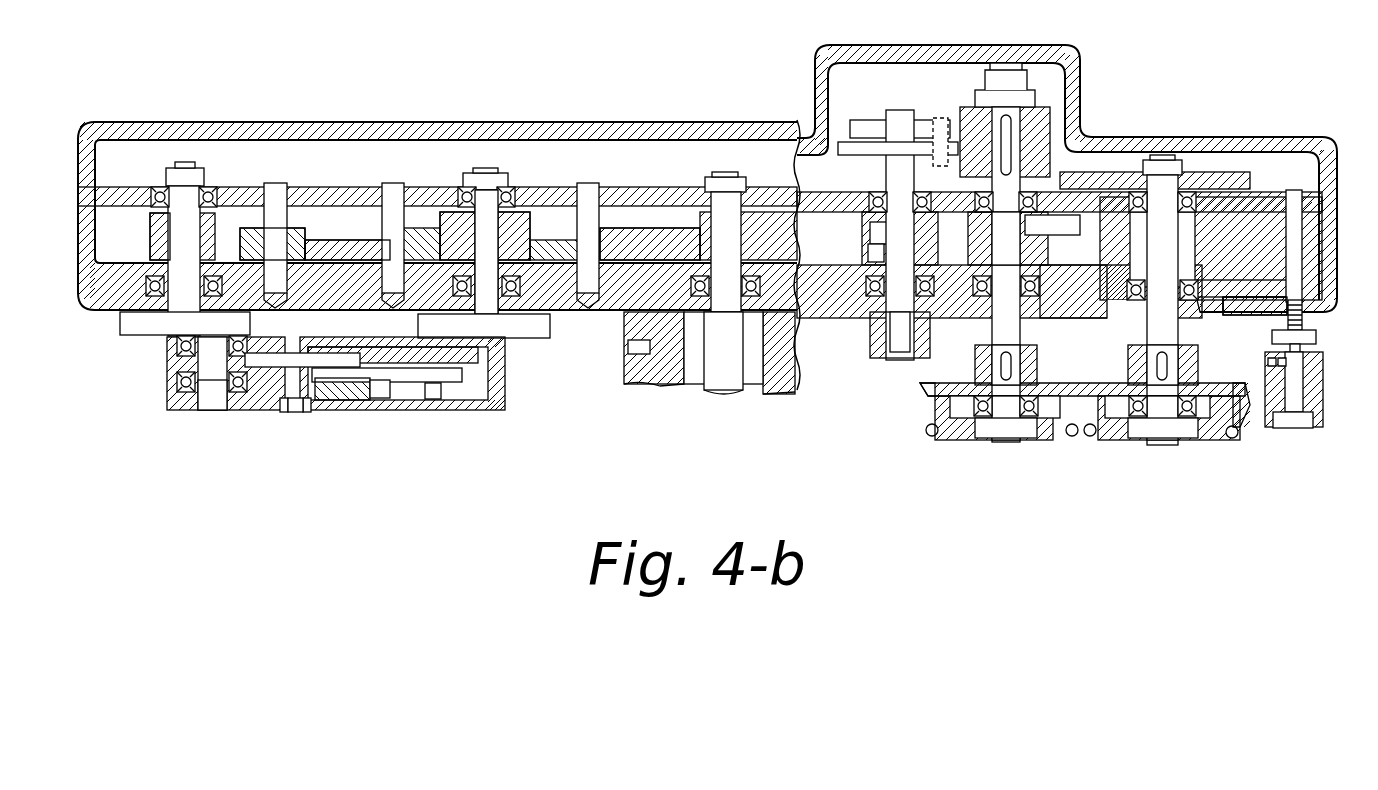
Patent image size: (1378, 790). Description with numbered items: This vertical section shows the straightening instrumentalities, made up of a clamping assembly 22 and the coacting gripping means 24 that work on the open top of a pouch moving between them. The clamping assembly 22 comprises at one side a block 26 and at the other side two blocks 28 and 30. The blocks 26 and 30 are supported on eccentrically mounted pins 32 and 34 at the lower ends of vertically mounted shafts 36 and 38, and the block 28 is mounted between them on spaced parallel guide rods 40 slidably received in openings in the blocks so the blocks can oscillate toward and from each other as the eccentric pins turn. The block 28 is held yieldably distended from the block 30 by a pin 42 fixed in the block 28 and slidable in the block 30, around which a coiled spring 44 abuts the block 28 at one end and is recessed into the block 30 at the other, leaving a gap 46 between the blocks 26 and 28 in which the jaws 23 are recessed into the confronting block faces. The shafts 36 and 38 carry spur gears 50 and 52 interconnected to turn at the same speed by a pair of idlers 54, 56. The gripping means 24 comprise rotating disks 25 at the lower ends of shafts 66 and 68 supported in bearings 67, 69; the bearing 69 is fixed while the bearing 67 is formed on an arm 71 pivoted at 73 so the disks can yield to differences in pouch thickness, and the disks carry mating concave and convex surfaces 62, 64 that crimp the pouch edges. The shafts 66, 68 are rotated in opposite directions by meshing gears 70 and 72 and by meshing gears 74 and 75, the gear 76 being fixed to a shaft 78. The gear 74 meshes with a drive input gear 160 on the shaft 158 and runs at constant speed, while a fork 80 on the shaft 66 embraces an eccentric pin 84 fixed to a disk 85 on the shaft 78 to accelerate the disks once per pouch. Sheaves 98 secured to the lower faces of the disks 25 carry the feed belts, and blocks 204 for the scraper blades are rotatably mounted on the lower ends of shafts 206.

The clamping assembly 22 is at (323, 406).
The jaws 23 is at (283, 418).
The gripping means 24 is at (1117, 418).
The rotating disks 25 is at (950, 384).
The block 26 is at (168, 380).
The block 28 is at (360, 412).
The block 30 is at (500, 398).
The eccentric pin 32 is at (205, 410).
The eccentric pin 34 is at (455, 325).
The shaft 36 is at (185, 290).
The shaft 38 is at (480, 170).
The guide rods 40 is at (298, 355).
The pin 42 is at (458, 392).
The coiled spring 44 is at (388, 410).
The gap 46 is at (293, 418).
The spur gear 50 is at (160, 214).
The spur gear 52 is at (515, 222).
The idler 54 is at (252, 230).
The idler 56 is at (354, 240).
The concave surface 62 is at (1243, 415).
The convex surface 64 is at (925, 398).
The shaft 66 is at (1022, 340).
The bearing 67 is at (1215, 318).
The shaft 68 is at (1162, 300).
The bearing 69 is at (1060, 320).
The gear 70 is at (1064, 180).
The arm 71 is at (1238, 300).
The gear 72 is at (1243, 182).
The pivot 73 is at (1302, 250).
The gear 74 is at (632, 238).
The gear 75 is at (1040, 233).
The gear 76 is at (868, 233).
The shaft 78 is at (873, 252).
The fork 80 is at (893, 122).
The eccentric pin 84 is at (945, 120).
The disk 85 is at (852, 153).
The sheaves 98 is at (962, 440).
The shaft 158 is at (700, 382).
The drive input gear 160 is at (768, 210).
The blocks 204 is at (1314, 424).
The shafts 206 is at (1298, 392).